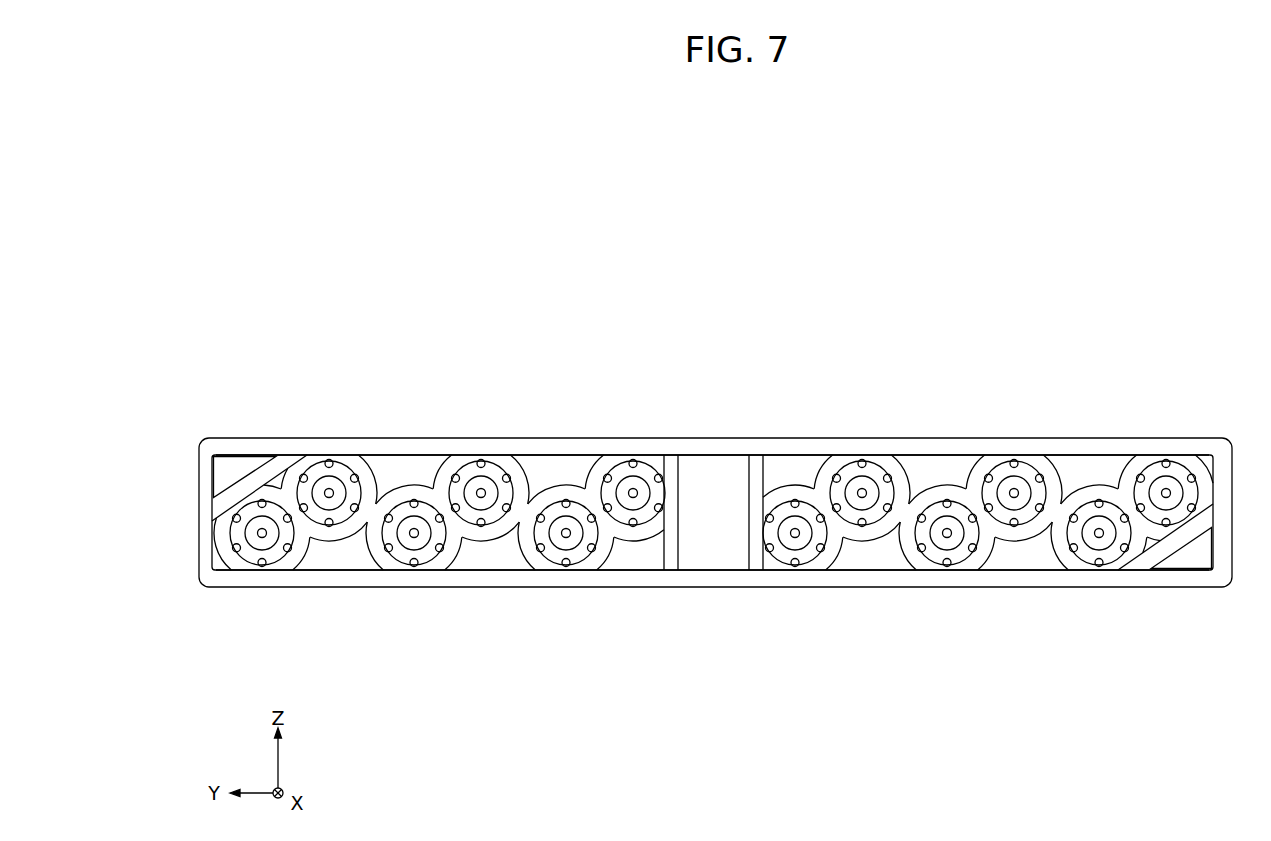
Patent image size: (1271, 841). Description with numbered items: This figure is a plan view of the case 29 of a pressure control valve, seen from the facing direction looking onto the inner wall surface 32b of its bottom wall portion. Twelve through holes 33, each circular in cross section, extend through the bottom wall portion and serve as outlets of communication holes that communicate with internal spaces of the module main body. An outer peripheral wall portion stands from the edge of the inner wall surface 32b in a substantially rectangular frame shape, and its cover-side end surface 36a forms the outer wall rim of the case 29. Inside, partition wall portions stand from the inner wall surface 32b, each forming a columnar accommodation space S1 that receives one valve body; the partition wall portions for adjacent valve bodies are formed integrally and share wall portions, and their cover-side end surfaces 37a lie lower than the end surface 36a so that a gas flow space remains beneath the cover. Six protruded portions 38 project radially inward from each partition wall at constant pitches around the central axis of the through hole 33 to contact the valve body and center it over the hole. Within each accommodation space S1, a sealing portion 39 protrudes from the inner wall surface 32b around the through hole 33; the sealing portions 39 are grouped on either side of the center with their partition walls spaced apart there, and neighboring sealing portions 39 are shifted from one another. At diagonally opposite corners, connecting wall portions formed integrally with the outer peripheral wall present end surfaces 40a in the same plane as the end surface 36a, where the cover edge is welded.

The case 29 is at (1233, 472).
The inner wall surface 32b is at (554, 472).
The through hole 33 is at (413, 537).
The end surface of outer peripheral wall portion 36a is at (478, 443).
The end surface of partition wall portion 37a is at (597, 493).
The protruded portion 38 is at (415, 500).
The sealing portion 39 is at (430, 552).
The end surface of connecting wall portion 40a is at (1181, 540).
The accommodation space S1 is at (268, 508).